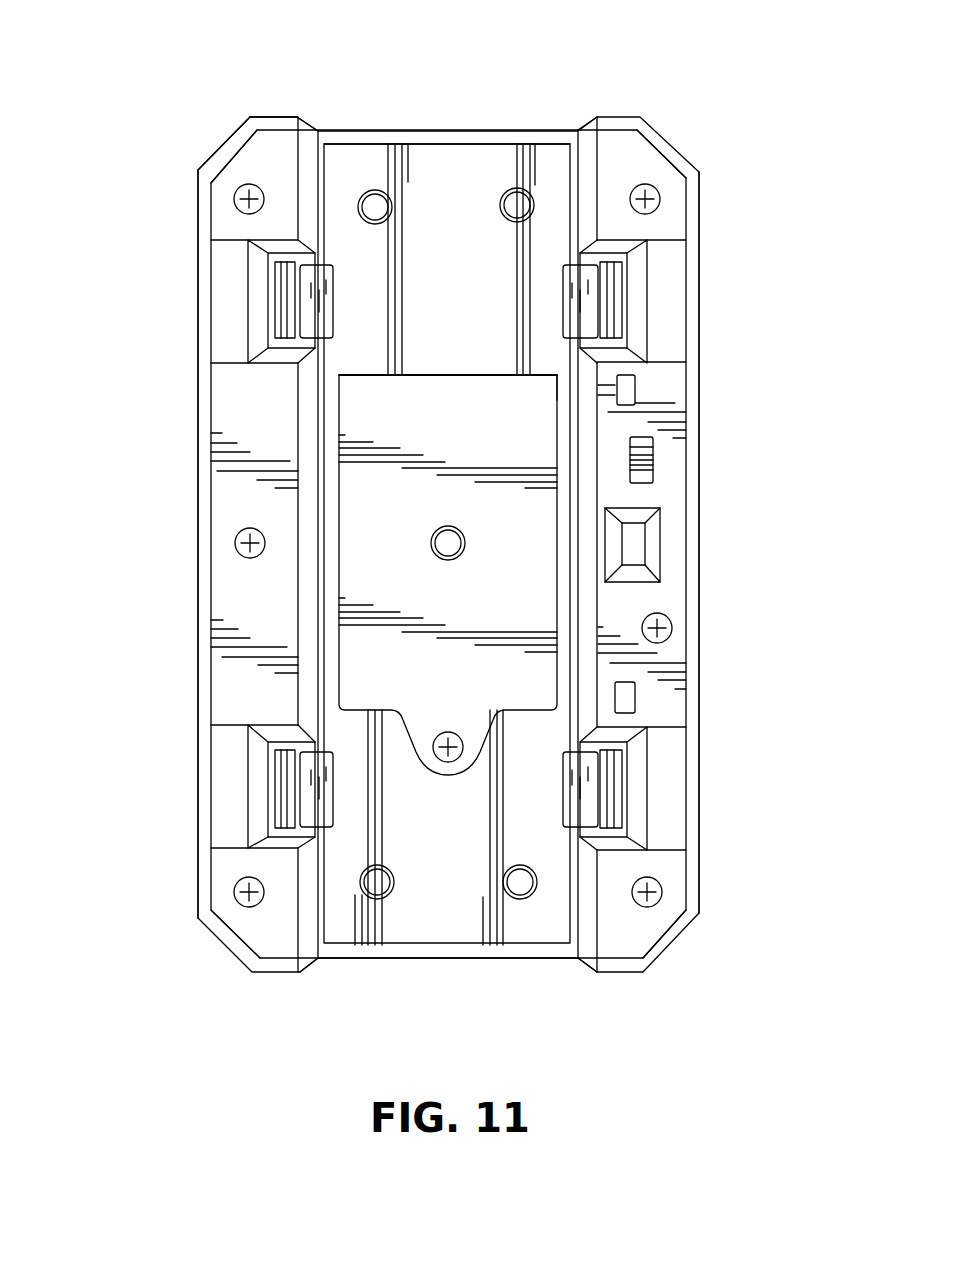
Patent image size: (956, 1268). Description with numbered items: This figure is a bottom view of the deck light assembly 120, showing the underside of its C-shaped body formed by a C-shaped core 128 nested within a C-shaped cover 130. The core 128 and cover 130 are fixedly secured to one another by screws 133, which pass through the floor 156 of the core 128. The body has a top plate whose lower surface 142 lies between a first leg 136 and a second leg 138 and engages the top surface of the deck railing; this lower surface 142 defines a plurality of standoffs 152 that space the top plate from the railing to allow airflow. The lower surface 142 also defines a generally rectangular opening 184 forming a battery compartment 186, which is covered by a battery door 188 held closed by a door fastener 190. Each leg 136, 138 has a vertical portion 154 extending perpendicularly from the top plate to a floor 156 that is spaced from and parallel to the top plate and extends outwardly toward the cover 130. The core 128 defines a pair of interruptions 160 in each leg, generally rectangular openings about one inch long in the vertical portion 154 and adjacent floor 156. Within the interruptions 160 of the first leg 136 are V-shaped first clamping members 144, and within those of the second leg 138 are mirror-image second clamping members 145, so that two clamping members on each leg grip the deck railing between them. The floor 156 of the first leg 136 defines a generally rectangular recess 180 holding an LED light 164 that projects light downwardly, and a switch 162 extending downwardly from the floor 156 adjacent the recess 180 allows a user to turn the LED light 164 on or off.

The deck light assembly 120 is at (447, 87).
The C-shaped core 128 is at (262, 158).
The C-shaped cover 130 is at (228, 147).
The screws 133 is at (237, 192).
The first leg 136 is at (706, 386).
The second leg 138 is at (190, 385).
The lower surface 142 is at (473, 155).
The first clamping member 144 is at (573, 285).
The second clamping member 145 is at (323, 280).
The standoffs 152 is at (517, 205).
The vertical portion 154 is at (310, 178).
The floor 156 is at (283, 150).
The interruptions 160 is at (232, 303).
The switch 162 is at (655, 458).
The LED light 164 is at (638, 552).
The recess 180 is at (655, 533).
The rectangular opening 184 is at (360, 378).
The battery compartment 186 is at (425, 393).
The battery door 188 is at (483, 388).
The door fastener 190 is at (442, 730).